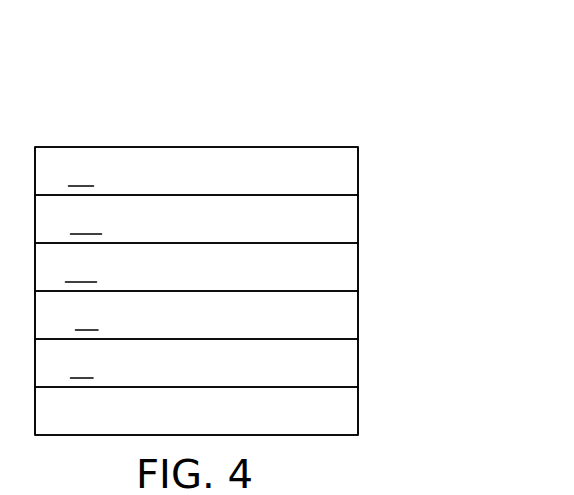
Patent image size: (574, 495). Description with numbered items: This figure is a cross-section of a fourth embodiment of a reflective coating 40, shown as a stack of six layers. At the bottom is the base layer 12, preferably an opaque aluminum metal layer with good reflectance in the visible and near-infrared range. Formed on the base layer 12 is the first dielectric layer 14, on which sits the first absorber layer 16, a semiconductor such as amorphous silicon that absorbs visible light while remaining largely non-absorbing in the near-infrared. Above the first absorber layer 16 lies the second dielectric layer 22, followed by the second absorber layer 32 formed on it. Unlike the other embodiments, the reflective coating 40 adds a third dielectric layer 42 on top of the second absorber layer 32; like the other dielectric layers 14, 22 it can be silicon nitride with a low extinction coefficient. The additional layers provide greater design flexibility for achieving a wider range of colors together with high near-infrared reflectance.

The reflective coating 40 is at (307, 120).
The third dielectric layer 42 is at (358, 173).
The second absorber layer 32 is at (358, 226).
The second dielectric layer 22 is at (358, 273).
The first absorber layer 16 is at (358, 323).
The first dielectric layer 14 is at (358, 369).
The base layer 12 is at (358, 419).